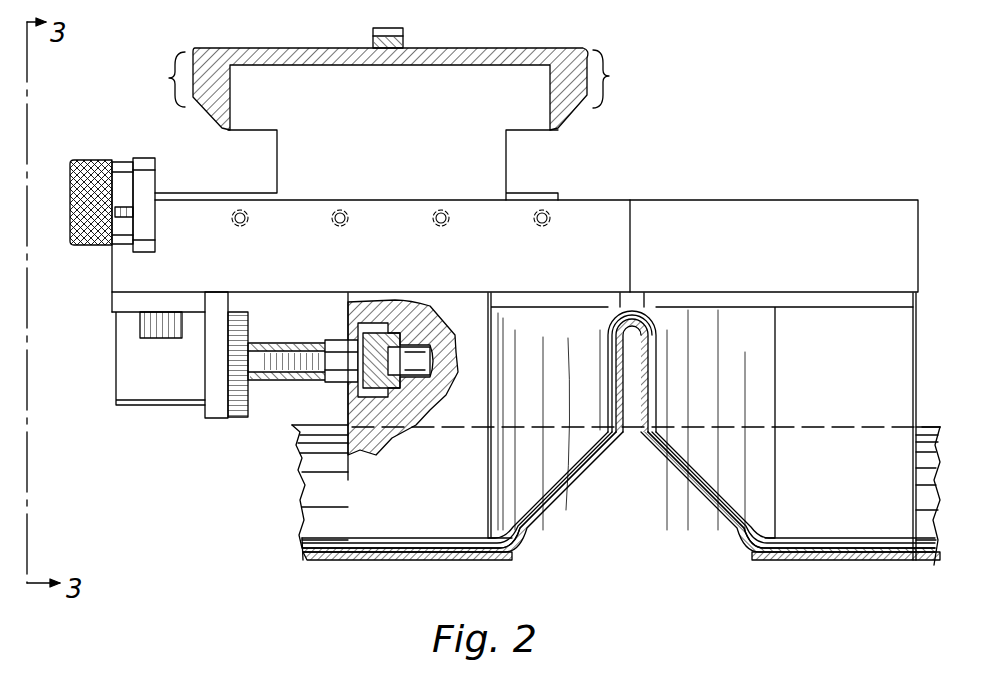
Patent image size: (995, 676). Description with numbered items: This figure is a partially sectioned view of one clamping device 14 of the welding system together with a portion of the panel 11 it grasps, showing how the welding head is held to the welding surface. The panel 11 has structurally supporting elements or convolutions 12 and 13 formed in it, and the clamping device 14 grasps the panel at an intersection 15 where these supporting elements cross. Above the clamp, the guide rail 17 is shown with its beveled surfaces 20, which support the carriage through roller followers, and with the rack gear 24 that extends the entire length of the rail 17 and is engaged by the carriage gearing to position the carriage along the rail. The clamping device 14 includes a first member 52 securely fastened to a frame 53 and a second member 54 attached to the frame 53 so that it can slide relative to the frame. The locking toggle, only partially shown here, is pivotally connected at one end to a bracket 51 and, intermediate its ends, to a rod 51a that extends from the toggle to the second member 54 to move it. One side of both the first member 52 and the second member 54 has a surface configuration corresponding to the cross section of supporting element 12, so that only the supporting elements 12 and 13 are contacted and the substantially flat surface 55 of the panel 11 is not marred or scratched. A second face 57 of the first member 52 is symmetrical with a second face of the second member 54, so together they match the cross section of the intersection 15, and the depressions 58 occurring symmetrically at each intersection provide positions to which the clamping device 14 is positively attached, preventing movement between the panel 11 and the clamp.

The panel 11 is at (316, 563).
The structurally supporting element 12 is at (296, 470).
The structurally supporting element 13 is at (637, 315).
The clamping device 14 is at (318, 397).
The intersection 15 is at (630, 438).
The guide rail 17 is at (543, 50).
The beveled surface 20 is at (394, 90).
The rack gear 24 is at (405, 36).
The bracket 51 is at (128, 378).
The rod 51a is at (284, 352).
The first member 52 is at (815, 525).
The frame 53 is at (668, 215).
The second member 54 is at (396, 522).
The flat surface 55 is at (428, 561).
The second face 57 is at (563, 492).
The depression 58 is at (614, 420).